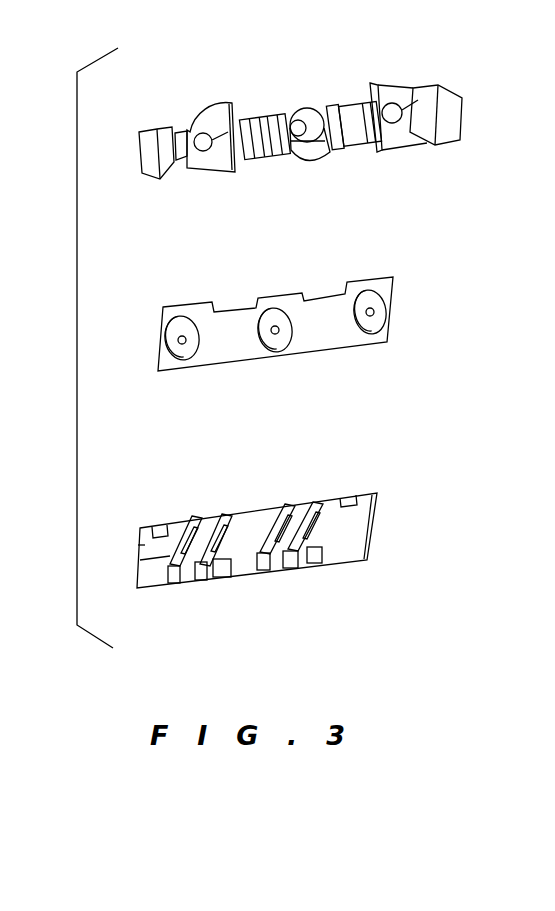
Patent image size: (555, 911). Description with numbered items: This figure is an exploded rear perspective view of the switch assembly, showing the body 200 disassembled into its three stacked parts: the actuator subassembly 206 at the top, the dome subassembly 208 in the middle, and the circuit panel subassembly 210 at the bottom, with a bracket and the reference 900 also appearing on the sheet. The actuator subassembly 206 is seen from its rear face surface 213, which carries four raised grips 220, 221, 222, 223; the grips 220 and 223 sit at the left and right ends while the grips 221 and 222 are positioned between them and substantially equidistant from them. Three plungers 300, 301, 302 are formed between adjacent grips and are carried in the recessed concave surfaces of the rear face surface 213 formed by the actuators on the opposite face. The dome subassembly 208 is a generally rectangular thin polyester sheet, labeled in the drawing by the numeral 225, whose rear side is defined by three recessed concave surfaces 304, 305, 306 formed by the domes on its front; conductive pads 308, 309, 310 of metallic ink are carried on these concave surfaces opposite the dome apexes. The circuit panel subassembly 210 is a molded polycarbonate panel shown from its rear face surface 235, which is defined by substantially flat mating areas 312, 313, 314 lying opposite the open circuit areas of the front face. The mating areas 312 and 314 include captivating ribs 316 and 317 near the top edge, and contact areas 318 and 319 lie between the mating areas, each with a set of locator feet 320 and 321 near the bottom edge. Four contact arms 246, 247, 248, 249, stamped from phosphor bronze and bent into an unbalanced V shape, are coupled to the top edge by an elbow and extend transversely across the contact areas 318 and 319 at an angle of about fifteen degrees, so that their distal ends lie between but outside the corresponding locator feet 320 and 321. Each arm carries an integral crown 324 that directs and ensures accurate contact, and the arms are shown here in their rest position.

The body 200 is at (97, 347).
The actuator subassembly 206 is at (337, 134).
The dome subassembly 208 is at (320, 329).
The circuit panel subassembly 210 is at (272, 561).
The rear face surface 213 is at (360, 130).
The grip 220 is at (445, 103).
The grip 221 is at (343, 112).
The grip 222 is at (267, 120).
The grip 223 is at (155, 127).
The plate body 225 is at (333, 338).
The rear face surface 235 is at (140, 565).
The arm 246 is at (308, 505).
The arm 247 is at (280, 527).
The arm 248 is at (227, 517).
The arm 249 is at (197, 527).
The plunger 300 is at (400, 122).
The plunger 301 is at (301, 138).
The plunger 302 is at (210, 152).
The concave surface 304 is at (366, 329).
The concave surface 305 is at (266, 334).
The concave surface 306 is at (172, 342).
The conductive pad 308 is at (369, 309).
The conductive pad 309 is at (273, 327).
The conductive pad 310 is at (181, 336).
The mating area 312 is at (362, 553).
The mating area 313 is at (247, 567).
The mating area 314 is at (147, 585).
The captivating rib 316 is at (375, 493).
The captivating rib 317 is at (160, 525).
The contact area 318 is at (320, 545).
The contact area 319 is at (225, 547).
The locator feet 320 is at (300, 592).
The locator feet 321 is at (195, 601).
The integral crown 324 is at (180, 557).
The reference 900 is at (538, 347).